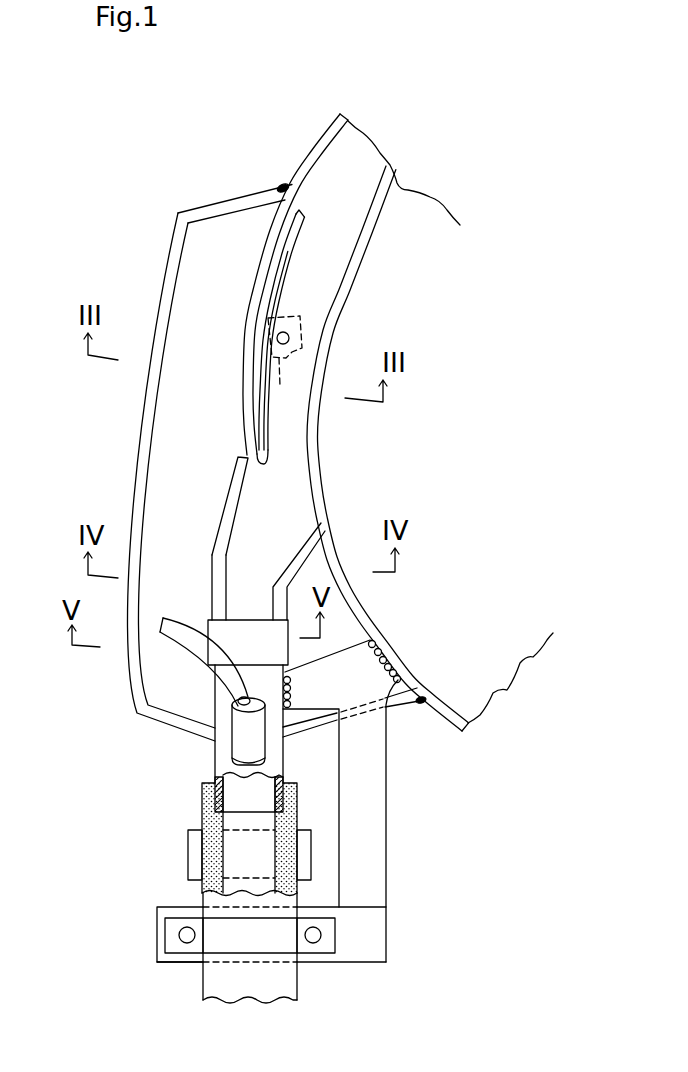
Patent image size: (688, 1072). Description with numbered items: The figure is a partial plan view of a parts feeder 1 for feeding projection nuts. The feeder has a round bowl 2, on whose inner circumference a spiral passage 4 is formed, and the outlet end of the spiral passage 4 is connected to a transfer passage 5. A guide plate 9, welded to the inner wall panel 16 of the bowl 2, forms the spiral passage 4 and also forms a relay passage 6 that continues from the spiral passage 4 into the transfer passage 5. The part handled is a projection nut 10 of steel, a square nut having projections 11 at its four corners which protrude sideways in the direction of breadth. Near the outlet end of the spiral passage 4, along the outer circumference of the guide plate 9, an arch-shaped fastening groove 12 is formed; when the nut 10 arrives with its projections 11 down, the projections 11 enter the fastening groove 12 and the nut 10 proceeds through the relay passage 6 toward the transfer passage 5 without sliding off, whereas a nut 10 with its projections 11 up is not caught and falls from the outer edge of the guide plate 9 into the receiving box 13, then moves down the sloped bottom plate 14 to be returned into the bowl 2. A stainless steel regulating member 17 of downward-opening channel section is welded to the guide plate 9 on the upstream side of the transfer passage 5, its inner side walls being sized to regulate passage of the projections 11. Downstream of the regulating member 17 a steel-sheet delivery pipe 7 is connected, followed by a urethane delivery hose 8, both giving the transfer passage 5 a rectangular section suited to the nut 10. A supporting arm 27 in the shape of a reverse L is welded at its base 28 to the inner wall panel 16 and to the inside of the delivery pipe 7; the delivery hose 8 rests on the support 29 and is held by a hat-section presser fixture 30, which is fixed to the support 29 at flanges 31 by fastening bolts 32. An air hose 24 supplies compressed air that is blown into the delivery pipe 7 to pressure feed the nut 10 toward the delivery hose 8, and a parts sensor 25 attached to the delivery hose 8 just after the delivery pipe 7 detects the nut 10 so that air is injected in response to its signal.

The parts feeder 1 is at (282, 130).
The round bowl 2 is at (517, 464).
The spiral passage 4 is at (360, 198).
The transfer passage 5 is at (230, 582).
The relay passage 6 is at (243, 527).
The delivery pipe 7 is at (213, 758).
The delivery hose 8 is at (202, 820).
The guide plate 9 is at (305, 483).
The projection nut 10 is at (289, 388).
The projections 11 is at (301, 316).
The fastening groove 12 is at (254, 383).
The receiving box 13 is at (160, 271).
The sloped bottom plate 14 is at (163, 431).
The inner wall panel 16 is at (318, 437).
The regulating member 17 is at (255, 620).
The air hose 24 is at (184, 643).
The parts sensor 25 is at (311, 855).
The supporting arm 27 is at (393, 822).
The base 28 is at (346, 650).
The support 29 is at (313, 962).
The presser fixture 30 is at (243, 945).
The flanges 31 is at (165, 924).
The fastening bolts 32 is at (185, 945).